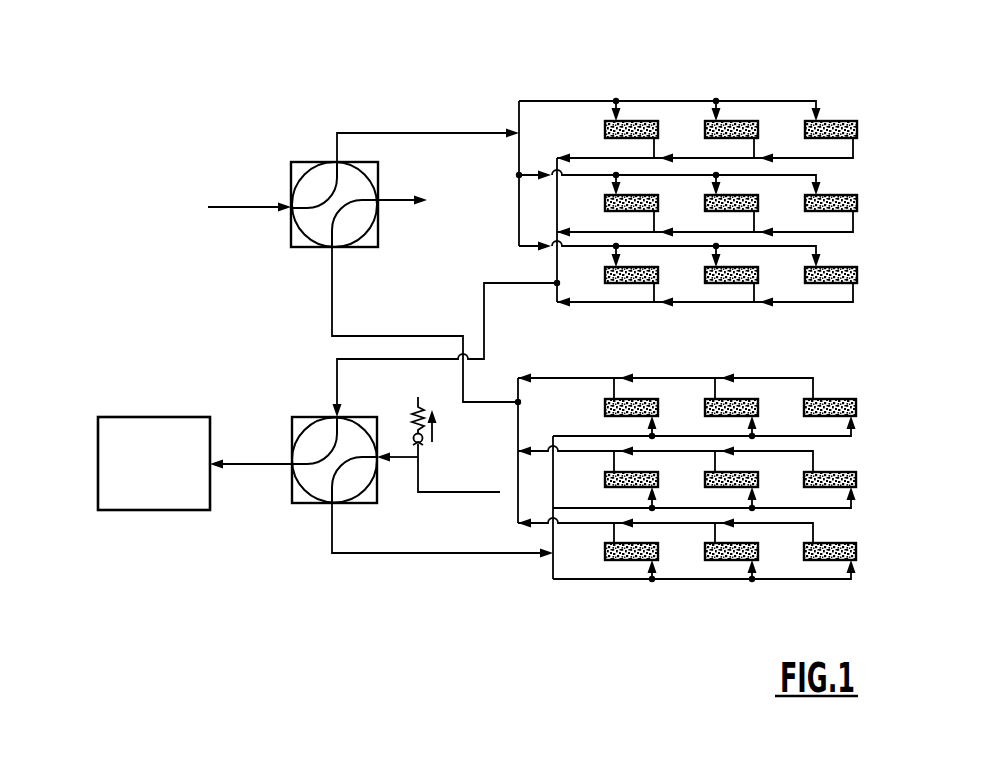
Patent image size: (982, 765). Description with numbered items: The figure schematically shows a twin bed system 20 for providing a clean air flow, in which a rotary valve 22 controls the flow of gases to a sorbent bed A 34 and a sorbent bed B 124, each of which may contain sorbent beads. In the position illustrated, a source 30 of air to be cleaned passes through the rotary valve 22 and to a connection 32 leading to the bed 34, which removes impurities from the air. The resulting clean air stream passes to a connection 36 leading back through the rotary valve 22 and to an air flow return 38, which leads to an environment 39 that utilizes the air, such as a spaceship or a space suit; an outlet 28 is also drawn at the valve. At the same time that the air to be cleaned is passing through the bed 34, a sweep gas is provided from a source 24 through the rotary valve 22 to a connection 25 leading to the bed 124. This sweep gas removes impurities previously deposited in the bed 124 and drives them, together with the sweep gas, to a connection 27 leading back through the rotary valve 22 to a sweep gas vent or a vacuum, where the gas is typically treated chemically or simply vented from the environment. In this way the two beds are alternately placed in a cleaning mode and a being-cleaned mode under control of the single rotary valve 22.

The system 20 is at (232, 116).
The rotary valve 22 is at (291, 233).
The source of sweep gas 24 is at (433, 492).
The connection 25 is at (592, 579).
The connection 27 is at (642, 378).
The product outlet 28 is at (390, 200).
The source of air to be cleaned 30 is at (240, 207).
The connection 32 is at (412, 133).
The sorbent bed A 34 is at (890, 142).
The connection 36 is at (526, 283).
The air flow return 38 is at (238, 464).
The environment 39 is at (165, 417).
The sorbent bed B 124 is at (736, 484).